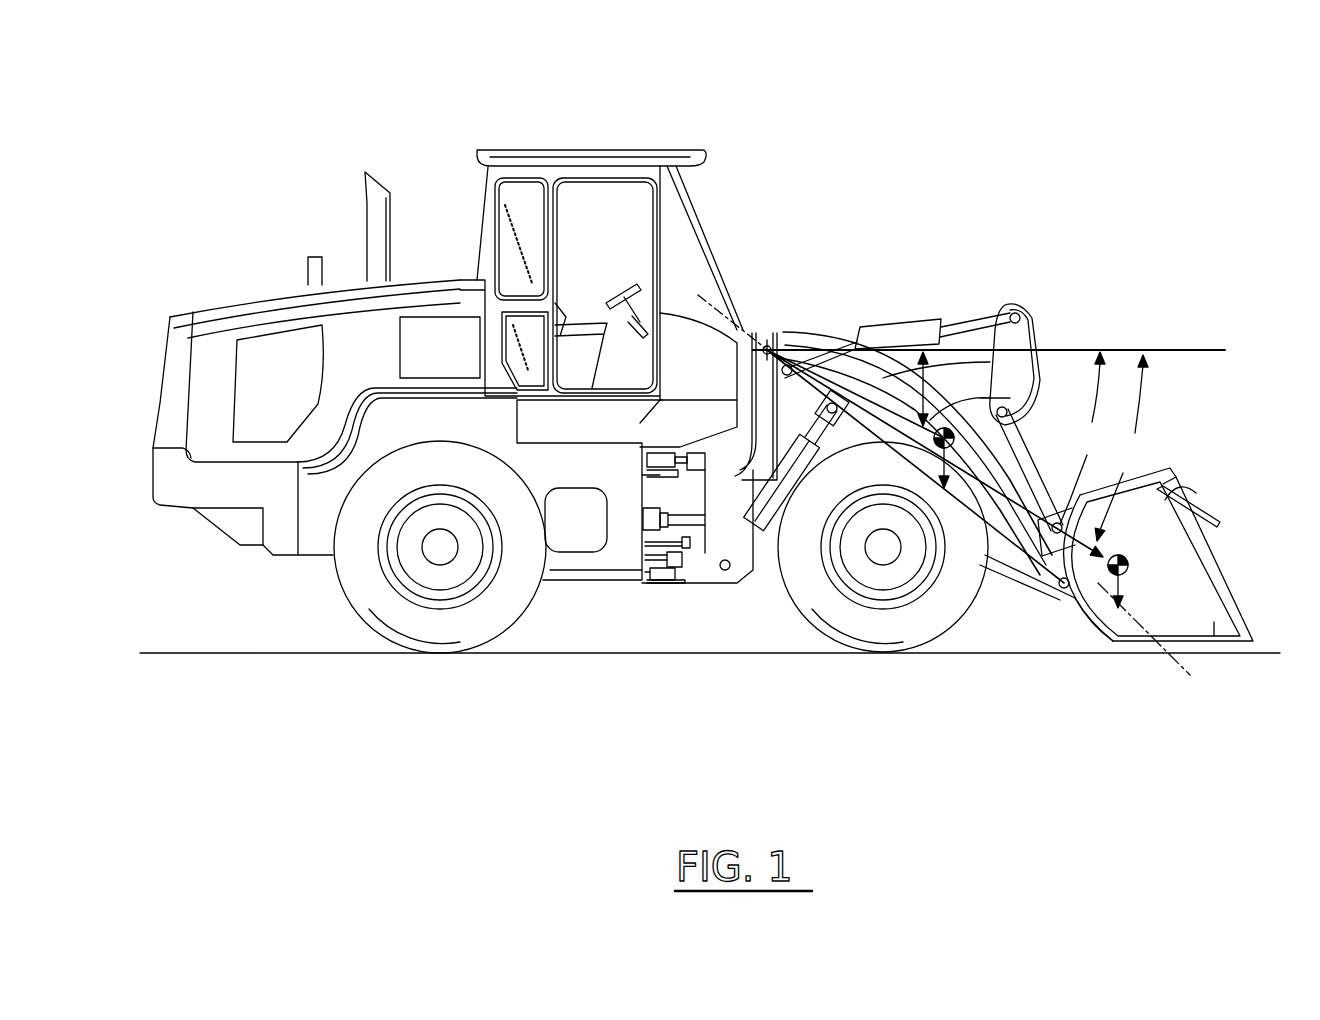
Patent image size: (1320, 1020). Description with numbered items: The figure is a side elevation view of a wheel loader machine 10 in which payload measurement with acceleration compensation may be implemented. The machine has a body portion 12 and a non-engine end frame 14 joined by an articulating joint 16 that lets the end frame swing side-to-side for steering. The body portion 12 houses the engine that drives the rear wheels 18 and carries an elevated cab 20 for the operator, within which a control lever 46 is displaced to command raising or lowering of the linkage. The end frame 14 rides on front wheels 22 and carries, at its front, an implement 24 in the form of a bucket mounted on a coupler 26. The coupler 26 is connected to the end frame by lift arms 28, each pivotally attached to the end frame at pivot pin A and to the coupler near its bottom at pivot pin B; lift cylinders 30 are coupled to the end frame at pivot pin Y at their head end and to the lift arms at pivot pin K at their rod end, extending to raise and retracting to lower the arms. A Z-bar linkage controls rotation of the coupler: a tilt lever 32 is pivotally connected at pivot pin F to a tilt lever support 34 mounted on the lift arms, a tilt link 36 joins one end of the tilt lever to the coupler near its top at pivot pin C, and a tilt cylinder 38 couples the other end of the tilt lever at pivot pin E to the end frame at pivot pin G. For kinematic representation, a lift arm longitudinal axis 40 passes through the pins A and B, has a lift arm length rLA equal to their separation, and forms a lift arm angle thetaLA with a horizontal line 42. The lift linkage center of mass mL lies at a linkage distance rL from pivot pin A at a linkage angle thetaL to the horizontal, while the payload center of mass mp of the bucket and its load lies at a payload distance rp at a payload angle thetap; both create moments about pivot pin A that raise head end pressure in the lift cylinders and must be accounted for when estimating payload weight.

The wheel loader machine 10 is at (312, 133).
The body portion 12 is at (240, 530).
The non-engine end frame 14 is at (805, 190).
The articulating joint 16 is at (662, 575).
The rear wheels 18 is at (412, 626).
The cab 20 is at (585, 149).
The front wheels 22 is at (875, 626).
The implement 24 is at (1210, 565).
The coupler 26 is at (1088, 622).
The lift arms 28 is at (880, 352).
The lift cylinders 30 is at (762, 512).
The tilt lever 32 is at (1018, 340).
The tilt lever support 34 is at (962, 398).
The tilt link 36 is at (1012, 508).
The tilt cylinder 38 is at (930, 332).
The lift arm longitudinal axis 40 is at (1178, 660).
The horizontal line 42 is at (1207, 350).
The control lever 46 is at (643, 328).
The pivot pin A is at (766, 345).
The pivot pin B is at (1060, 592).
The pivot pin C is at (1056, 522).
The pivot pin E is at (1018, 312).
The pivot pin F is at (1010, 410).
The pivot pin G is at (790, 365).
The pivot pin K is at (834, 403).
The pivot pin Y is at (724, 578).
The lift linkage center of mass mL is at (962, 458).
The payload center of mass mp is at (1133, 583).
The linkage distance rL is at (881, 392).
The lift arm length rLA is at (961, 520).
The payload distance rp is at (1089, 567).
The linkage angle thetaL is at (936, 389).
The lift arm angle thetaLA is at (1086, 438).
The payload angle thetap is at (1121, 448).